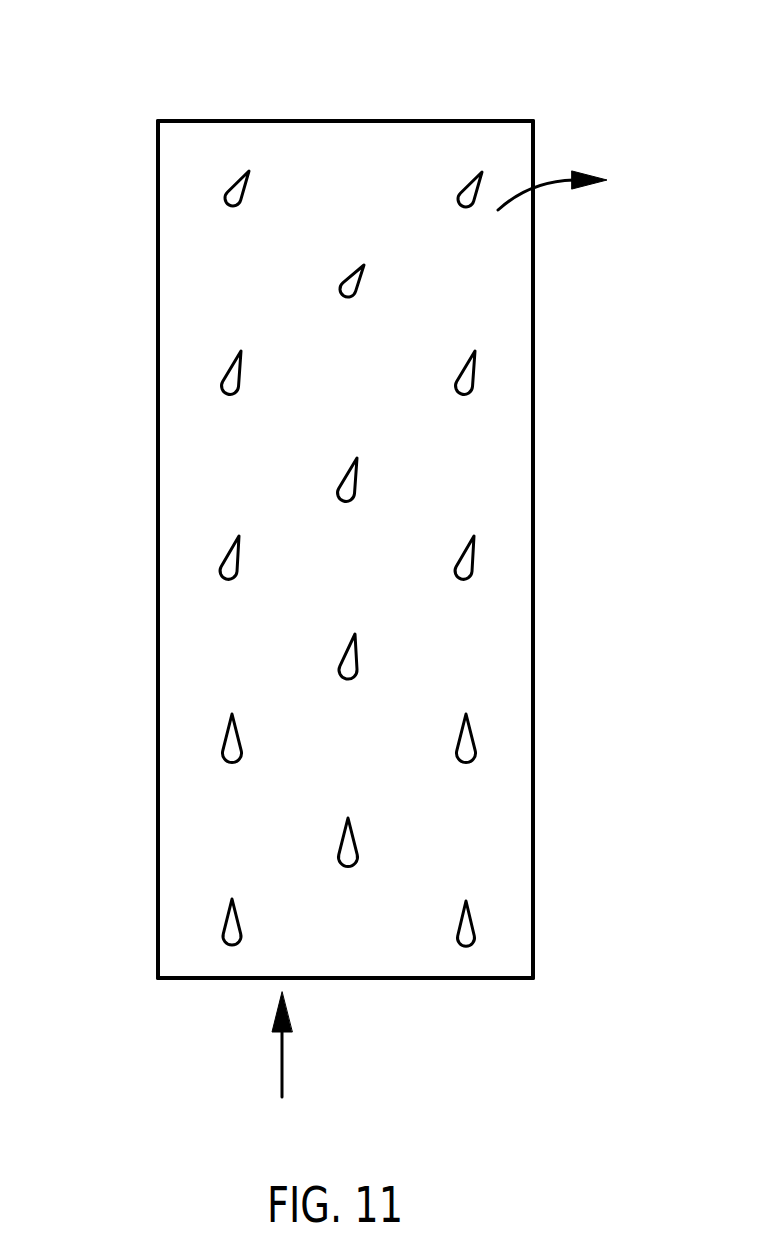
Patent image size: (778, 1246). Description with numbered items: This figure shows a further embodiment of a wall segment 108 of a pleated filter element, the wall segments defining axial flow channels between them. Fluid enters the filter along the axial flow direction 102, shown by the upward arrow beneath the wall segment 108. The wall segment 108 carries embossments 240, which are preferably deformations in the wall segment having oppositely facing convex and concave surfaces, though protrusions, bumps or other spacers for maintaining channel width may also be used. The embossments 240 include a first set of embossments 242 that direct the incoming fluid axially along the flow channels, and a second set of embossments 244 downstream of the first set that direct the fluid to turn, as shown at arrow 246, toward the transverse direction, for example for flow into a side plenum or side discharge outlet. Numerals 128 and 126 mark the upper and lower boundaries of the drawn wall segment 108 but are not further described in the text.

The wall segment 108 is at (172, 586).
The upper edge of plate 128 is at (182, 120).
The lower edge of plate 126 is at (189, 979).
The second set of embossments 244 is at (366, 284).
The embossments 240 is at (384, 640).
The first set of embossments 242 is at (475, 922).
The arrow 246 is at (547, 181).
The axial flow direction 102 is at (282, 1064).